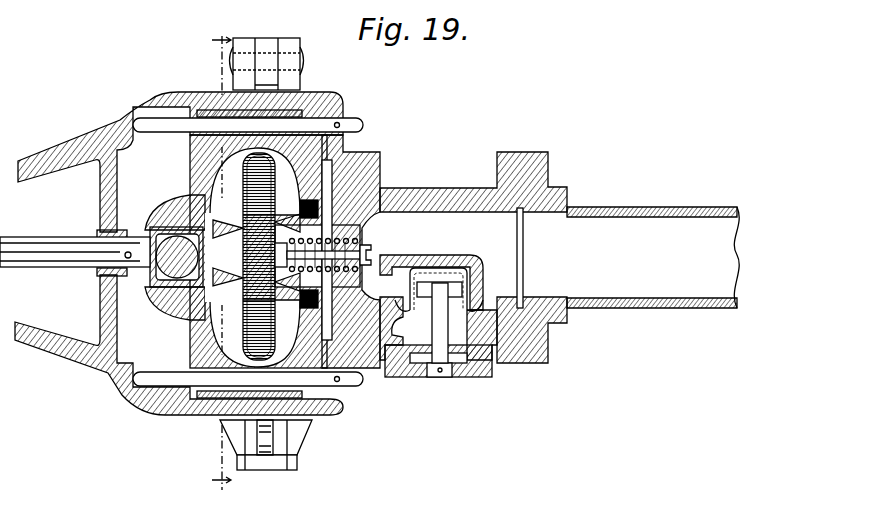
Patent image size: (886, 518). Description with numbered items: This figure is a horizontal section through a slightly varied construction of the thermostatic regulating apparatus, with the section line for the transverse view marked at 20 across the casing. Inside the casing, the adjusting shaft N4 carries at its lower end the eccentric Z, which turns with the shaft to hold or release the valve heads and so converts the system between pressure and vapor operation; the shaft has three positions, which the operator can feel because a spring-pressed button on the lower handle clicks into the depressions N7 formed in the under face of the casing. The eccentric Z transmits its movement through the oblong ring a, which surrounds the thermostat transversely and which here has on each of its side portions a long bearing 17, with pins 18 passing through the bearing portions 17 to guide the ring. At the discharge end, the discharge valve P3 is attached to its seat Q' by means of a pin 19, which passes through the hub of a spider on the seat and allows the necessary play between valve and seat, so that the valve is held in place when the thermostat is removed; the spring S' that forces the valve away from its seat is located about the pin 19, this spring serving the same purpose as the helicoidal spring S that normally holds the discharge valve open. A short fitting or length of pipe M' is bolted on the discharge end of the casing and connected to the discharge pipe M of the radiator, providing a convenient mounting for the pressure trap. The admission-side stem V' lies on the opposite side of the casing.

The long bearing 17 is at (203, 111).
The pins 18 is at (160, 119).
The pin 19 is at (362, 258).
The sheet metal pipe 20 is at (260, 260).
The discharge valve P3 is at (325, 210).
The seat Q' is at (364, 250).
The spring S' is at (343, 219).
The short fitting or length of pipe M' is at (558, 257).
The discharge pipe M is at (672, 257).
The helicoidal spring S is at (438, 336).
The depressions N7 is at (178, 205).
The adjusting shaft N4 is at (160, 300).
The eccentric Z is at (150, 222).
The shaft V' is at (75, 267).
The oblong ring a is at (193, 362).